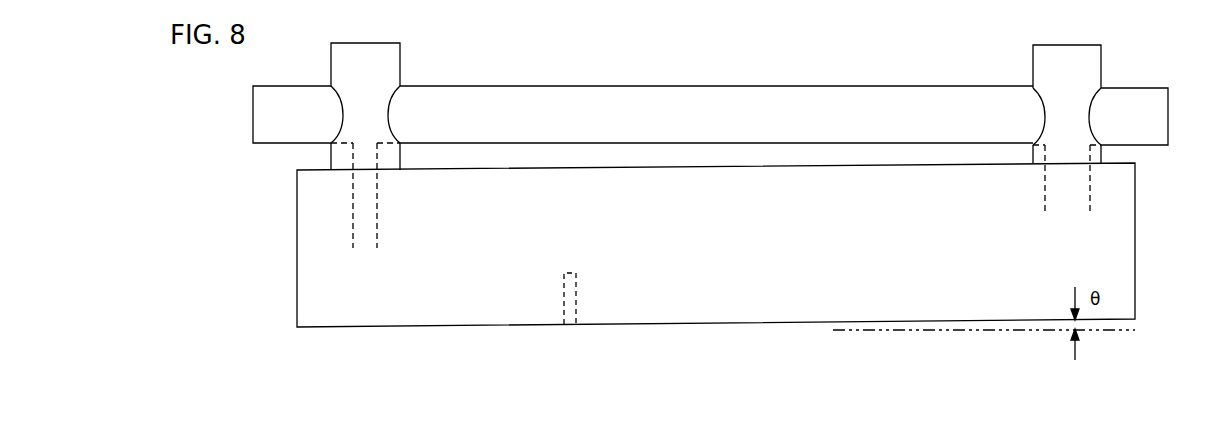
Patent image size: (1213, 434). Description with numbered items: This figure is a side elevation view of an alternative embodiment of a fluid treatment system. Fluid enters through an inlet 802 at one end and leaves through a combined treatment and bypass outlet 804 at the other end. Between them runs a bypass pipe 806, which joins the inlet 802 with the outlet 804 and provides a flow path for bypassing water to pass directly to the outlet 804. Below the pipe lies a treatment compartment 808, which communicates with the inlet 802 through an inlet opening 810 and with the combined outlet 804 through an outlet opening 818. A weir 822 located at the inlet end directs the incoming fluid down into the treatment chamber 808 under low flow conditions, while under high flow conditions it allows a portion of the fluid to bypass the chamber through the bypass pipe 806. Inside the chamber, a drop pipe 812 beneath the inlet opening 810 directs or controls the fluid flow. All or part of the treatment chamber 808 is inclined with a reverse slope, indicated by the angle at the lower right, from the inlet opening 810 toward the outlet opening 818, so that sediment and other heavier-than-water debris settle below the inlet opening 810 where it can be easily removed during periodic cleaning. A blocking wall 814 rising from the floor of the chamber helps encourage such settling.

The inlet 802 is at (265, 113).
The combined treatment and bypass outlet 804 is at (1143, 93).
The bypass pipe 806 is at (588, 97).
The treatment compartment 808 is at (365, 310).
The inlet opening 810 is at (366, 150).
The drop pipe 812 is at (352, 205).
The blocking wall 814 is at (576, 292).
The outlet opening 818 is at (1067, 142).
The weir 822 is at (375, 133).